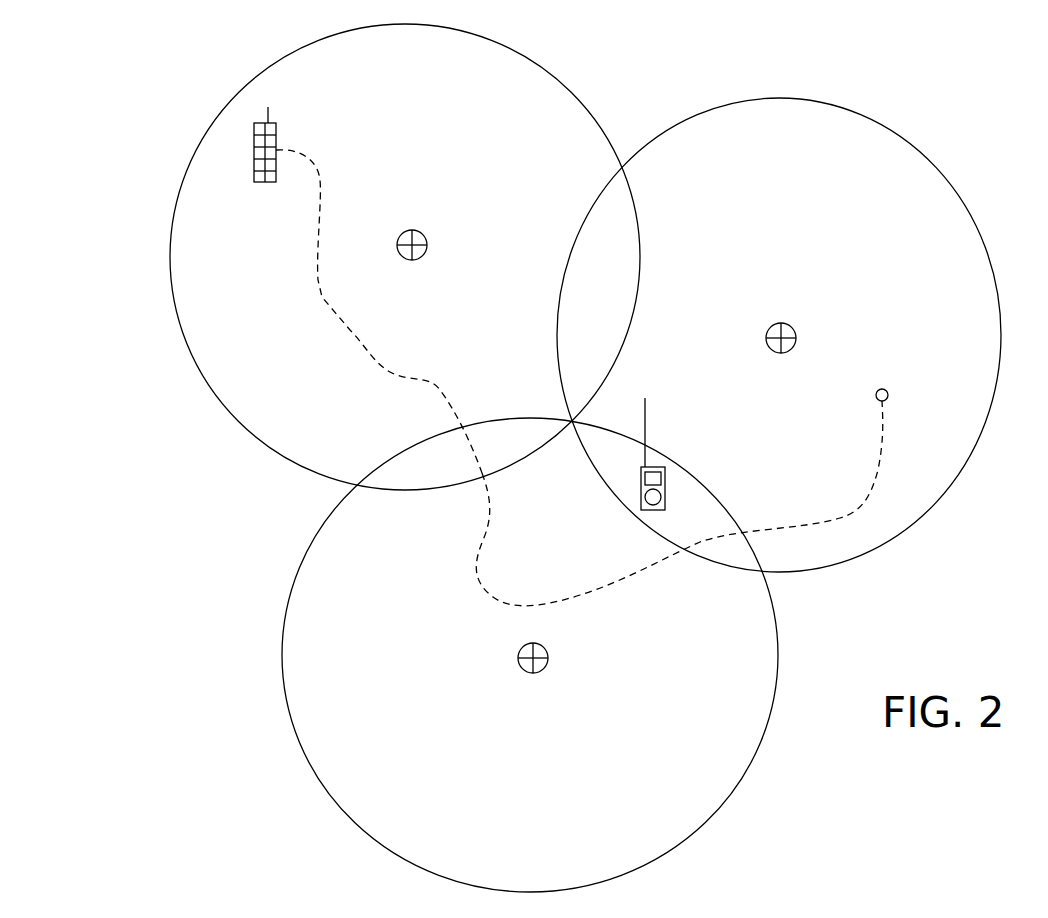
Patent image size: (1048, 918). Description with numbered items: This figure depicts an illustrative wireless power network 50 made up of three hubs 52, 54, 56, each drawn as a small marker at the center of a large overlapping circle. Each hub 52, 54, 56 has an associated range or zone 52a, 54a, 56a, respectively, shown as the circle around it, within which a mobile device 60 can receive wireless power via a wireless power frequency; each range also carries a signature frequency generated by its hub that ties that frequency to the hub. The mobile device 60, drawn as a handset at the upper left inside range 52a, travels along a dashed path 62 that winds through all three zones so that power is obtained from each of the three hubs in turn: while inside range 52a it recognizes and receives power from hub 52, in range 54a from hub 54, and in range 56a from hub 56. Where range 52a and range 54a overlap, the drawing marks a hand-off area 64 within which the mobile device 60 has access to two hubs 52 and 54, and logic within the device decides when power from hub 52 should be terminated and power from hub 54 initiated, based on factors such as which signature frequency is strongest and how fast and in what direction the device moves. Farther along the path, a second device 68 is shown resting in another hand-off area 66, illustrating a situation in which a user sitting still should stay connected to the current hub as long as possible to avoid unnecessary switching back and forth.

The wireless power network 50 is at (96, 92).
The hub 52 is at (426, 233).
The range 52a is at (520, 53).
The hub 54 is at (521, 670).
The range 54a is at (283, 695).
The hub 56 is at (792, 323).
The range 56a is at (958, 193).
The mobile device 60 is at (254, 160).
The path 62 is at (322, 297).
The hand-off area 64 is at (408, 473).
The hand-off area 66 is at (752, 562).
The device 68 is at (645, 398).